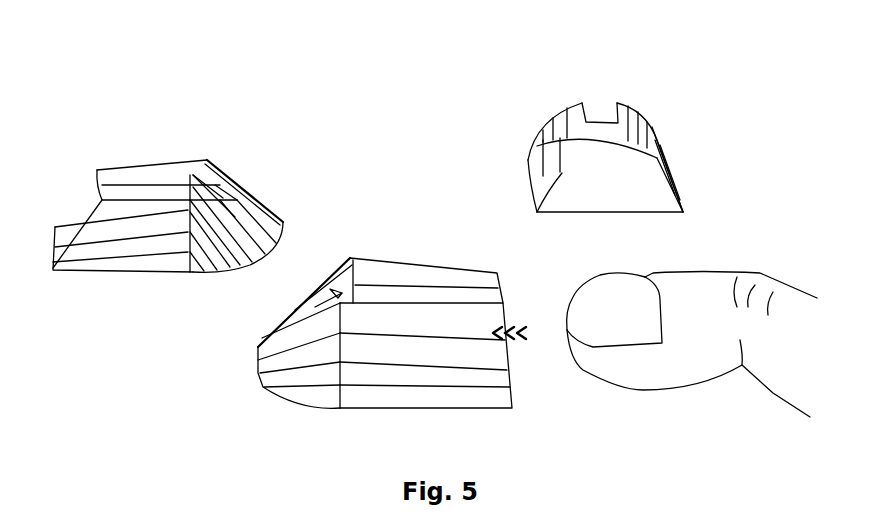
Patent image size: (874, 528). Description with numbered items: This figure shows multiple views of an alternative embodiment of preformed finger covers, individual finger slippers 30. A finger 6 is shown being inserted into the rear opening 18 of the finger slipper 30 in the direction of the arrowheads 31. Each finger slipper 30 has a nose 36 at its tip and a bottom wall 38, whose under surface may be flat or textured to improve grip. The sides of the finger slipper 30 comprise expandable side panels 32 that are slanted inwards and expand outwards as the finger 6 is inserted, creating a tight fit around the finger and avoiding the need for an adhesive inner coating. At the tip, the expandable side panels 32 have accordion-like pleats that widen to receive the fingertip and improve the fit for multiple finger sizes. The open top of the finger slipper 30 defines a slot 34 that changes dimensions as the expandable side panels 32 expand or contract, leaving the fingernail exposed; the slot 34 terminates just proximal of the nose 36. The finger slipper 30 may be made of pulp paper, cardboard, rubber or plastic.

The finger 6 is at (657, 368).
The rear opening 18 is at (88, 202).
The finger slipper 30 is at (514, 181).
The arrowheads 31 is at (530, 347).
The expandable side panels 32 is at (163, 163).
The slot 34 is at (210, 180).
The nose 36 is at (262, 255).
The bottom wall 38 is at (628, 185).